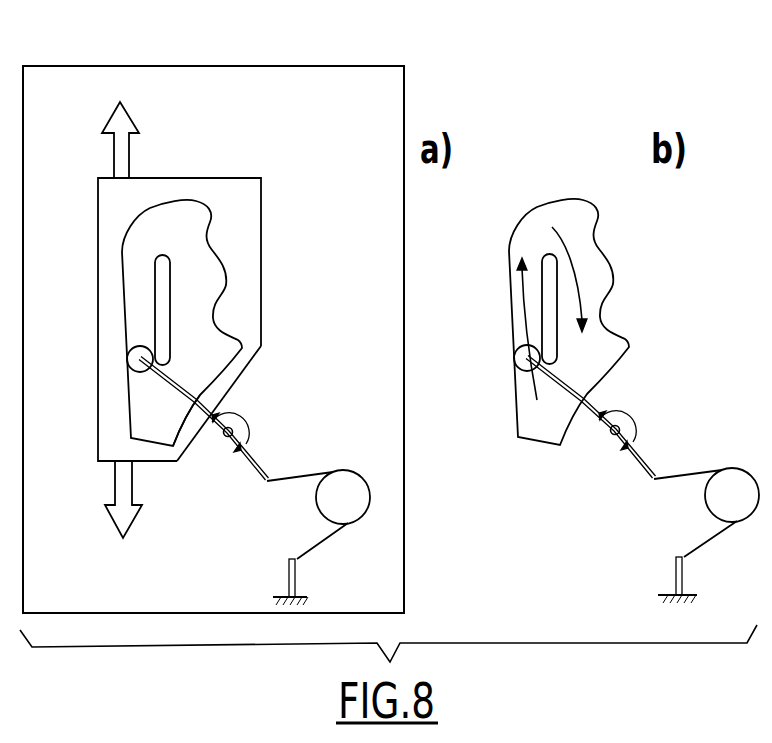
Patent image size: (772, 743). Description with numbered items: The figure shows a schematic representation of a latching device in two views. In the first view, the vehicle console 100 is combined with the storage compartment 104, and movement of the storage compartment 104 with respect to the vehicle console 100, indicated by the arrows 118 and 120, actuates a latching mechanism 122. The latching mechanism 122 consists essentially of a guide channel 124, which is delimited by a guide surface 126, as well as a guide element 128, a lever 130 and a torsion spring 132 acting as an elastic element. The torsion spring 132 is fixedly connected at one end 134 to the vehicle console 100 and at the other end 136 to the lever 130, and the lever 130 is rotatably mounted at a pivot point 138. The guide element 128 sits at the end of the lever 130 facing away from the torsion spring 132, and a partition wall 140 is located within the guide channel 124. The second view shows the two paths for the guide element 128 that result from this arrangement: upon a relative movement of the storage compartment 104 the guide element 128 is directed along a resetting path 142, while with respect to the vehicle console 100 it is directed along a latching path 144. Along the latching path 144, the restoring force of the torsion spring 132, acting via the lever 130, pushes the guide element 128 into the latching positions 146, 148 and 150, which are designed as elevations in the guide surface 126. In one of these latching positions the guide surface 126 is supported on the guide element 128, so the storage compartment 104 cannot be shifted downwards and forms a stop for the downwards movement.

The vehicle console 100 is at (338, 78).
The storage compartment 104 is at (108, 212).
The arrow 118 is at (113, 158).
The arrow 120 is at (115, 481).
The latching mechanism 122 is at (270, 231).
The guide channel 124 is at (212, 343).
The guide surface 126 is at (226, 288).
The guide element 128 is at (132, 360).
The lever 130 is at (197, 389).
The torsion spring 132 is at (370, 490).
The end 134 is at (290, 560).
The end 136 is at (265, 483).
The pivot point 138 is at (234, 433).
The partition wall 140 is at (162, 289).
The resetting path 142 is at (522, 312).
The latching path 144 is at (574, 245).
The latching position 146 is at (594, 207).
The latching position 148 is at (613, 273).
The latching position 150 is at (633, 336).